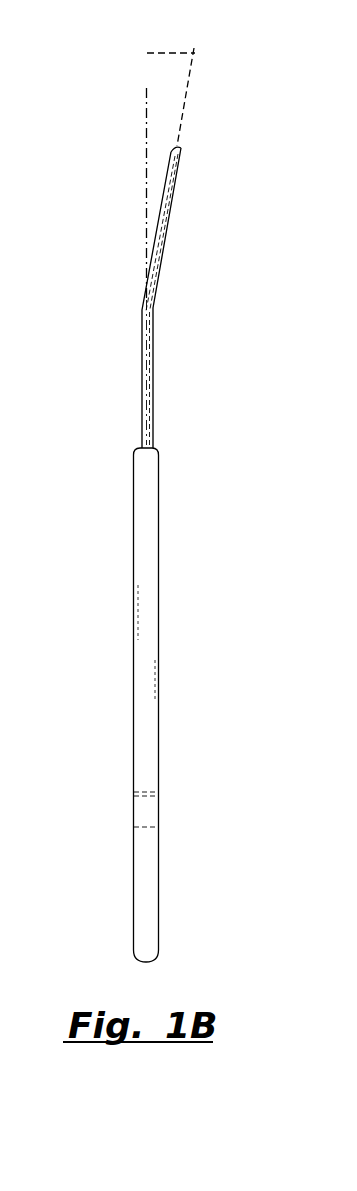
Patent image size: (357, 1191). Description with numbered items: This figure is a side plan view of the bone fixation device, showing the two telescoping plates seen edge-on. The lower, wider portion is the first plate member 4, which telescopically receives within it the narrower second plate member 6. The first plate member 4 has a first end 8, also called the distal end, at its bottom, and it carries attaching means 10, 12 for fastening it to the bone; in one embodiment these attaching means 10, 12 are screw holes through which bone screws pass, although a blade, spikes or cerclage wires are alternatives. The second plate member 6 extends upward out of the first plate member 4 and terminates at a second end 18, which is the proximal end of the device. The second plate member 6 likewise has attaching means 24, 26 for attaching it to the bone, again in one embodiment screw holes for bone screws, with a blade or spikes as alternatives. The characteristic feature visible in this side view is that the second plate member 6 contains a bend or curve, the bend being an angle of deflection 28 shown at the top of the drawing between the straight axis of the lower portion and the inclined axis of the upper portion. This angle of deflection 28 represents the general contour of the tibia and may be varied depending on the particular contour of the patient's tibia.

The first plate member 4 is at (142, 658).
The second plate member 6 is at (133, 383).
The first end 8 is at (133, 867).
The attaching means 10 is at (137, 797).
The attaching means 12 is at (137, 930).
The second end 18 is at (163, 212).
The attaching means 24 is at (173, 186).
The attaching means 26 is at (167, 228).
The angle of deflection 28 is at (170, 53).